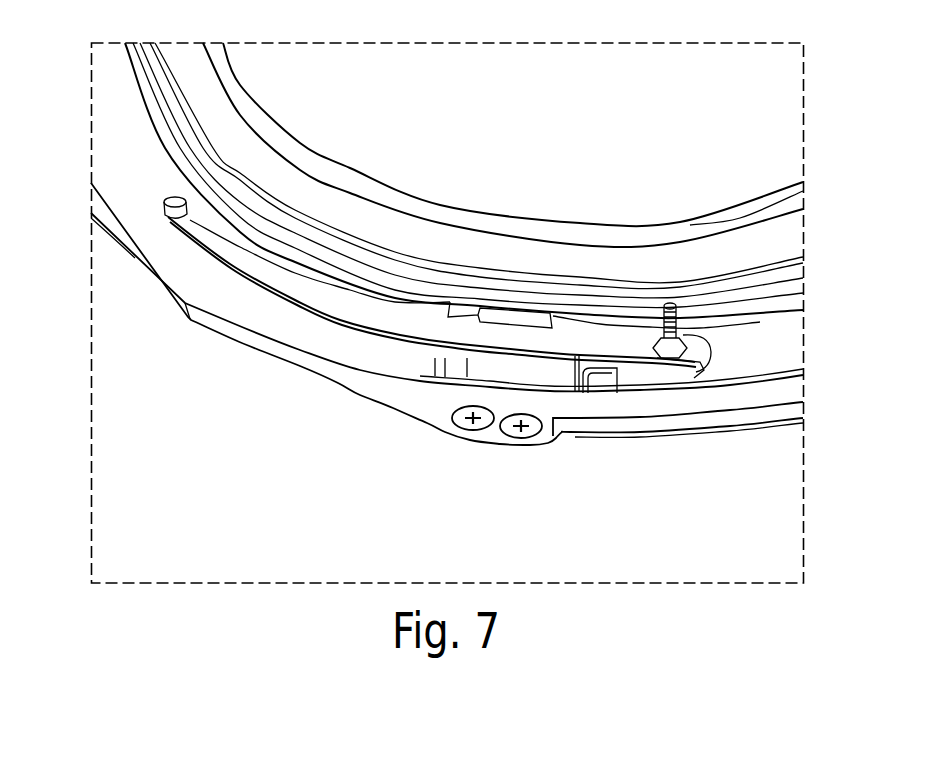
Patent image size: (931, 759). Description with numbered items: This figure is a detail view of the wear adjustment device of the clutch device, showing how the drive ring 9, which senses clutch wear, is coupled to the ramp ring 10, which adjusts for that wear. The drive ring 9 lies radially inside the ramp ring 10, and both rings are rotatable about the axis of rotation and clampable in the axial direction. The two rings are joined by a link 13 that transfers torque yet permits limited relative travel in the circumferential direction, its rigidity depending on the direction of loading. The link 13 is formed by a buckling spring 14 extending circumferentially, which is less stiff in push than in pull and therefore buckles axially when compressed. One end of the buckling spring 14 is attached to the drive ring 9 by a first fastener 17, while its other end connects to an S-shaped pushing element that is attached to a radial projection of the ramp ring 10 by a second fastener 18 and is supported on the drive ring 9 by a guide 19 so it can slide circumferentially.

The drive ring 9 is at (469, 250).
The ramp ring 10 is at (324, 352).
The link 13 is at (209, 325).
The buckling spring 14 is at (443, 330).
The first fastener 17 is at (168, 203).
The second fastener 18 is at (540, 373).
The guide 19 is at (693, 363).